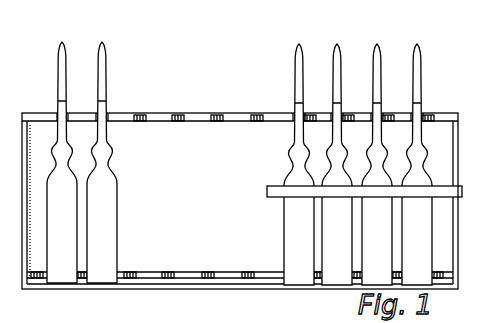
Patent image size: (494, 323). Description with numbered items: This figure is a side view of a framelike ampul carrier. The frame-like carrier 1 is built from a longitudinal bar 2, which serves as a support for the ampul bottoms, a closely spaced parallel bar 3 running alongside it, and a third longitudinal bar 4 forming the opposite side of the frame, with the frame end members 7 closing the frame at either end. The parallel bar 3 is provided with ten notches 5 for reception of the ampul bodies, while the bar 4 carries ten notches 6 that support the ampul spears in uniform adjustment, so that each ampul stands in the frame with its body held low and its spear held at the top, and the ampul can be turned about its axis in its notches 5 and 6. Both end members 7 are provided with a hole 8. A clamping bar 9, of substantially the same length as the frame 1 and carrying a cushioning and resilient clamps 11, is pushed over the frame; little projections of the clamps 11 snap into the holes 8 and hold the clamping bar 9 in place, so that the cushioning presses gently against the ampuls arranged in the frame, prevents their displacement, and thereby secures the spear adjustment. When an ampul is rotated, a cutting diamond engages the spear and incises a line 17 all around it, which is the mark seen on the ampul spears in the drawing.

The frame-like carrier 1 is at (457, 118).
The longitudinal bar 2 is at (217, 286).
The parallel bar 3 is at (198, 272).
The third longitudinal bar 4 is at (196, 114).
The notches 5 is at (142, 272).
The notches 6 is at (142, 114).
The frame end members 7 is at (27, 144).
The hole 8 is at (27, 190).
The clamping bar 9 is at (450, 188).
The resilient clamps 11 is at (460, 198).
The line 17 is at (298, 102).